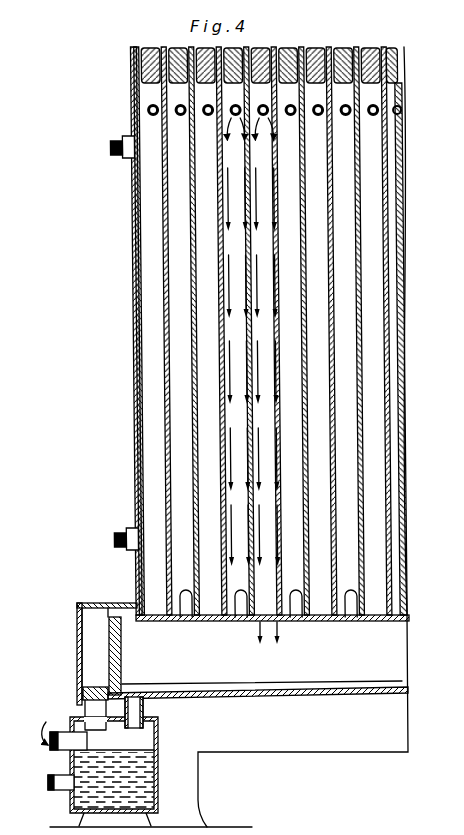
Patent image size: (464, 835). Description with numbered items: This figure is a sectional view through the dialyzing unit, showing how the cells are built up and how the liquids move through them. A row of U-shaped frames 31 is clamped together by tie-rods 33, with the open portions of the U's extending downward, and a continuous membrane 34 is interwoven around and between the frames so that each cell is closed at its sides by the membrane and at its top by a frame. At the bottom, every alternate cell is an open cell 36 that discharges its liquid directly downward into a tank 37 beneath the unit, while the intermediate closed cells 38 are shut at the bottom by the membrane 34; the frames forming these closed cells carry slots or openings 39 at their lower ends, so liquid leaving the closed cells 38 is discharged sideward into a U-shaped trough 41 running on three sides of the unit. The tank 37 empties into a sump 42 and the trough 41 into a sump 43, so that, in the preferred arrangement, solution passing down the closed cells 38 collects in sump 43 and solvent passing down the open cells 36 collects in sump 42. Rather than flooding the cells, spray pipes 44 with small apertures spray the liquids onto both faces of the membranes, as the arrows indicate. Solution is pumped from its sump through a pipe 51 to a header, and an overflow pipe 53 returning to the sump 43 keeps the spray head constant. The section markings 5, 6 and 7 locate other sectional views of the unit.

The U-shaped frame 31 is at (150, 70).
The tie-rod 33 is at (114, 142).
The membrane 34 is at (165, 353).
The open cell 36 is at (150, 588).
The tank 37 is at (395, 652).
The closed cell 38 is at (190, 516).
The slot or opening 39 is at (235, 619).
The U-shaped trough 41 is at (93, 630).
The sump 42 is at (143, 764).
The sump 43 is at (145, 740).
The spray pipe 44 is at (180, 116).
The pipe 51 is at (68, 777).
The overflow pipe 53 is at (58, 728).
The section line 5- 5 is at (52, 545).
The section line 6- 6 is at (340, 20).
The section line 7- 7 is at (344, 612).